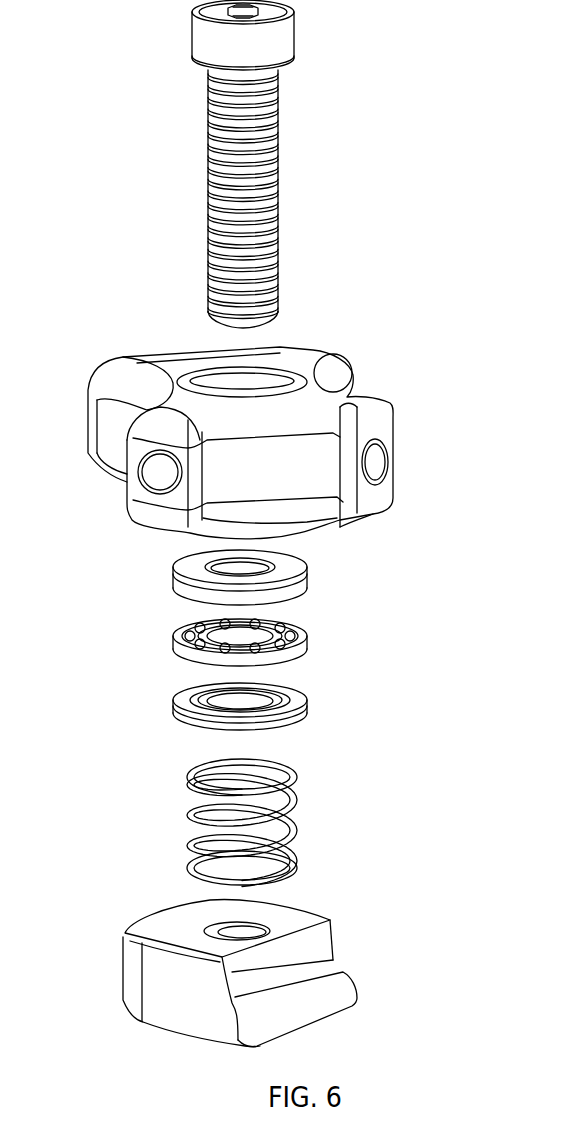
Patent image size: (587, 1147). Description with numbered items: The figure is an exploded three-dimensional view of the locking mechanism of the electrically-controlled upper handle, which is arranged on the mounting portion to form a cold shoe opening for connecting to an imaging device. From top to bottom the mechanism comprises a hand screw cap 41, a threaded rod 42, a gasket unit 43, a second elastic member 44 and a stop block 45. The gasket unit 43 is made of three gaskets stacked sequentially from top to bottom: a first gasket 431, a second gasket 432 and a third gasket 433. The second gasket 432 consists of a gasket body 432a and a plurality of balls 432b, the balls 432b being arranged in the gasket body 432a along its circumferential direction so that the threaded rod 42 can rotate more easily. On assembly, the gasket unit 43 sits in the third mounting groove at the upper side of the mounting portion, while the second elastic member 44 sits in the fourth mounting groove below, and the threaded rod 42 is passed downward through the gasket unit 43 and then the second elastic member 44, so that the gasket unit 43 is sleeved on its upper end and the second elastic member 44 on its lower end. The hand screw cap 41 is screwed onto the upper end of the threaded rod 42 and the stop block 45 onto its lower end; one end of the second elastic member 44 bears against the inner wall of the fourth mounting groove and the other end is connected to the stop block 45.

The hand screw cap 41 is at (372, 403).
The threaded rod 42 is at (283, 153).
The gasket unit 43 is at (294, 629).
The first gasket 431 is at (303, 568).
The second gasket 432 is at (252, 621).
The gasket body 432a is at (176, 650).
The balls 432b is at (183, 631).
The third gasket 433 is at (302, 698).
The second elastic member 44 is at (297, 851).
The stop block 45 is at (318, 947).